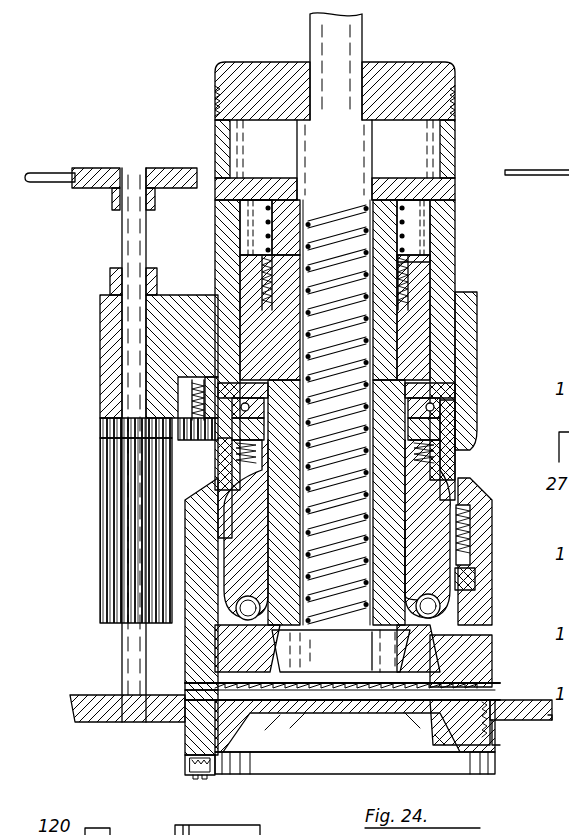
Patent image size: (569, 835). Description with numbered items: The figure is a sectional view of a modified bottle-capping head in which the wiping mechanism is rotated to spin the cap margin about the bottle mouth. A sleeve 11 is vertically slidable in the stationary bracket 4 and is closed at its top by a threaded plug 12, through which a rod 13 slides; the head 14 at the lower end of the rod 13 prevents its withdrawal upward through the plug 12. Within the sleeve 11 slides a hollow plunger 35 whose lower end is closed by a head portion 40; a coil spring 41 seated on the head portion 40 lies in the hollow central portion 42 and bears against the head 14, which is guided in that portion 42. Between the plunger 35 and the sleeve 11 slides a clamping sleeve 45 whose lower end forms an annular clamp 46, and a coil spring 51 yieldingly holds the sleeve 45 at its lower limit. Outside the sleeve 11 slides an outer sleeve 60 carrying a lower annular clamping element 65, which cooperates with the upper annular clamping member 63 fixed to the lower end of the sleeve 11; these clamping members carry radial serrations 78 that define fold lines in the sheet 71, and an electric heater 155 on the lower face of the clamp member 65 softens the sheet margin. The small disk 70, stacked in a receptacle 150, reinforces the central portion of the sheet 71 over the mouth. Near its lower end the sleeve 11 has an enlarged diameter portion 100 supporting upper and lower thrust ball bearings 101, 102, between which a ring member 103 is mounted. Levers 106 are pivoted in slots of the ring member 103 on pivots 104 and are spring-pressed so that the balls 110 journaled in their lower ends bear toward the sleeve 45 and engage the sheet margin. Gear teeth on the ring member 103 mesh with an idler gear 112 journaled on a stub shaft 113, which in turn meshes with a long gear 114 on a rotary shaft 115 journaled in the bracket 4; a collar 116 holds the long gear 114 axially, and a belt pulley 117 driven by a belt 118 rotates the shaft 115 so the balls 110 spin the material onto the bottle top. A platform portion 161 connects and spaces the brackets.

The rod 13 is at (357, 45).
The threaded plug 12 is at (437, 73).
The head 14 is at (357, 153).
The sleeve 11 is at (450, 160).
The hollow plunger 35 is at (440, 208).
The coil spring 41 is at (440, 220).
The coil spring 51 is at (440, 243).
The hollow central portion 42 is at (440, 268).
The receptacle 150 is at (470, 311).
The upper thrust ball bearing 101 is at (457, 383).
The ring member 103 is at (467, 427).
The pivot 104 is at (473, 447).
The enlarged diameter portion 100 is at (437, 477).
The lower thrust ball bearing 102 is at (473, 503).
The lever 106 is at (477, 560).
The sleeve 45 is at (486, 577).
The ball 110 is at (445, 610).
The head portion 40 is at (357, 624).
The disk 70 is at (386, 637).
The upper annular clamping member 63 is at (365, 684).
The serrations 78 is at (362, 686).
The annular clamp 46 is at (388, 716).
The lower annular clamping element 65 is at (318, 715).
The electric heater 155 is at (186, 764).
The sleeve 60 is at (185, 662).
The sheet 71 is at (512, 698).
The platform portion 161 is at (548, 721).
The driving belt 118 is at (52, 170).
The belt pulley 117 is at (113, 167).
The rotary shaft 115 is at (123, 235).
The collar 116 is at (110, 274).
The bracket arm 4 is at (104, 368).
The stub shaft 113 is at (196, 380).
The idler gear 112 is at (167, 428).
The long gear 114 is at (100, 528).